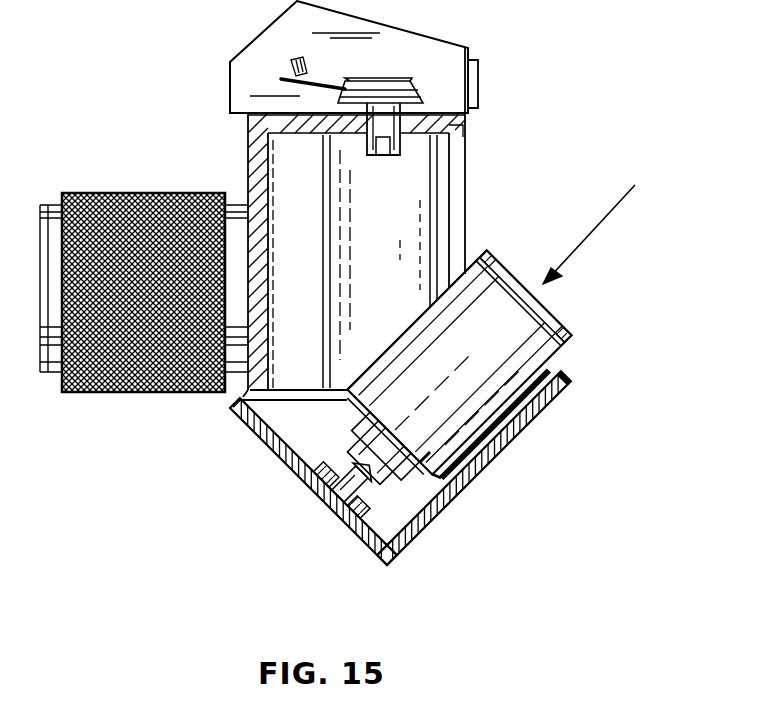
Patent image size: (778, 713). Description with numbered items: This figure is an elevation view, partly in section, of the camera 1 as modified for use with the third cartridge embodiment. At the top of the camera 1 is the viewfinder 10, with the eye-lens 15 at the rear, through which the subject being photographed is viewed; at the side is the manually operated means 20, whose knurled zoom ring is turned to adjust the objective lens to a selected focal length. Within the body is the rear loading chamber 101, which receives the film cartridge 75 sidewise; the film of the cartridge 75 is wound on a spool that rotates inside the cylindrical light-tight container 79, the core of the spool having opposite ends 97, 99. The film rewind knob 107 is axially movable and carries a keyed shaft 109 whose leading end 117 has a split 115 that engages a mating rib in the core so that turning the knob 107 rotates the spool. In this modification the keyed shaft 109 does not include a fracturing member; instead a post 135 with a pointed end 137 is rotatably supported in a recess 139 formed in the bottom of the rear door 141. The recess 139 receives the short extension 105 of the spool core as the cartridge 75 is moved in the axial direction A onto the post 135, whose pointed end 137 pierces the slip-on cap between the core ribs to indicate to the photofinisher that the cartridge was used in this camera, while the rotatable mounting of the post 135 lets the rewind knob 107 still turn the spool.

The camera 1 is at (240, 147).
The viewfinder 10 is at (266, 46).
The eye-lens 15 is at (480, 72).
The manually operated means 20 is at (97, 393).
The film cartridge 75 is at (558, 352).
The cylindrical light-tight container 79 is at (512, 350).
The end of the core 97 is at (568, 326).
The end of the core 99 is at (418, 472).
The rear loading chamber 101 is at (350, 350).
The short extension 105 is at (368, 440).
The film rewind knob 107 is at (393, 80).
The keyed shaft 109 is at (405, 117).
The split 115 is at (386, 152).
The leading end 117 is at (374, 152).
The post 135 is at (370, 468).
The pointed end 137 is at (362, 460).
The recess 139 is at (346, 506).
The rear door 141 is at (516, 430).
The axial direction A is at (562, 282).